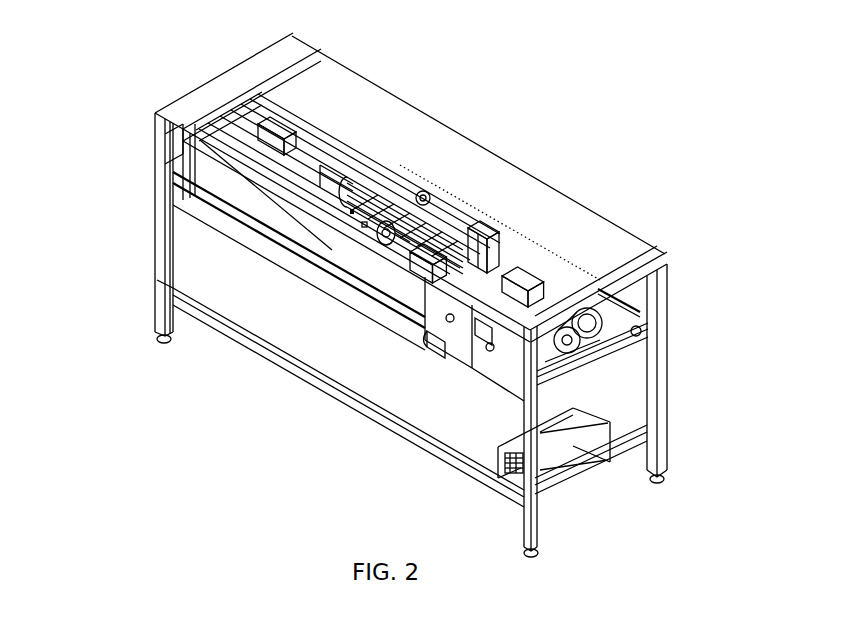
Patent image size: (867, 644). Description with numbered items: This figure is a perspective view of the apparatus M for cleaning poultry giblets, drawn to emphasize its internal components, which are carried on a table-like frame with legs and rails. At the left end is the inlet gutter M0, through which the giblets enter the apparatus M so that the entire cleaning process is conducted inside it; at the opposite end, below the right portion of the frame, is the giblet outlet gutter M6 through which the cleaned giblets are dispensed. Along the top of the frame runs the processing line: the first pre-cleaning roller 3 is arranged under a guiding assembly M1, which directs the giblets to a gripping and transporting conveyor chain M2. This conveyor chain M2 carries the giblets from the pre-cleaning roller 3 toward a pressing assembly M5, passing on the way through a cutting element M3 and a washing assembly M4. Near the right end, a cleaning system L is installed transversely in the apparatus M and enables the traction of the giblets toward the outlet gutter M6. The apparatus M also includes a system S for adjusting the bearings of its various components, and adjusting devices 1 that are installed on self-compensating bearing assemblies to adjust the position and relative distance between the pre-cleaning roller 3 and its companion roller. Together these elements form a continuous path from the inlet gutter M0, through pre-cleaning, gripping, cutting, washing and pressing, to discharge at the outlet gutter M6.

The apparatus M is at (143, 60).
The inlet gutter M0 is at (170, 153).
The guiding assembly M1 is at (274, 141).
The gripping and transporting conveyor chain M2 is at (390, 194).
The cutting element M3 is at (386, 245).
The washing assembly M4 is at (424, 261).
The pressing assembly M5 is at (472, 242).
The giblet outlet gutter M6 is at (436, 346).
The system for adjusting the bearings S is at (460, 180).
The cleaning system L is at (517, 270).
The adjusting devices 1 is at (351, 236).
The first pre-cleaning roller 3 is at (310, 196).